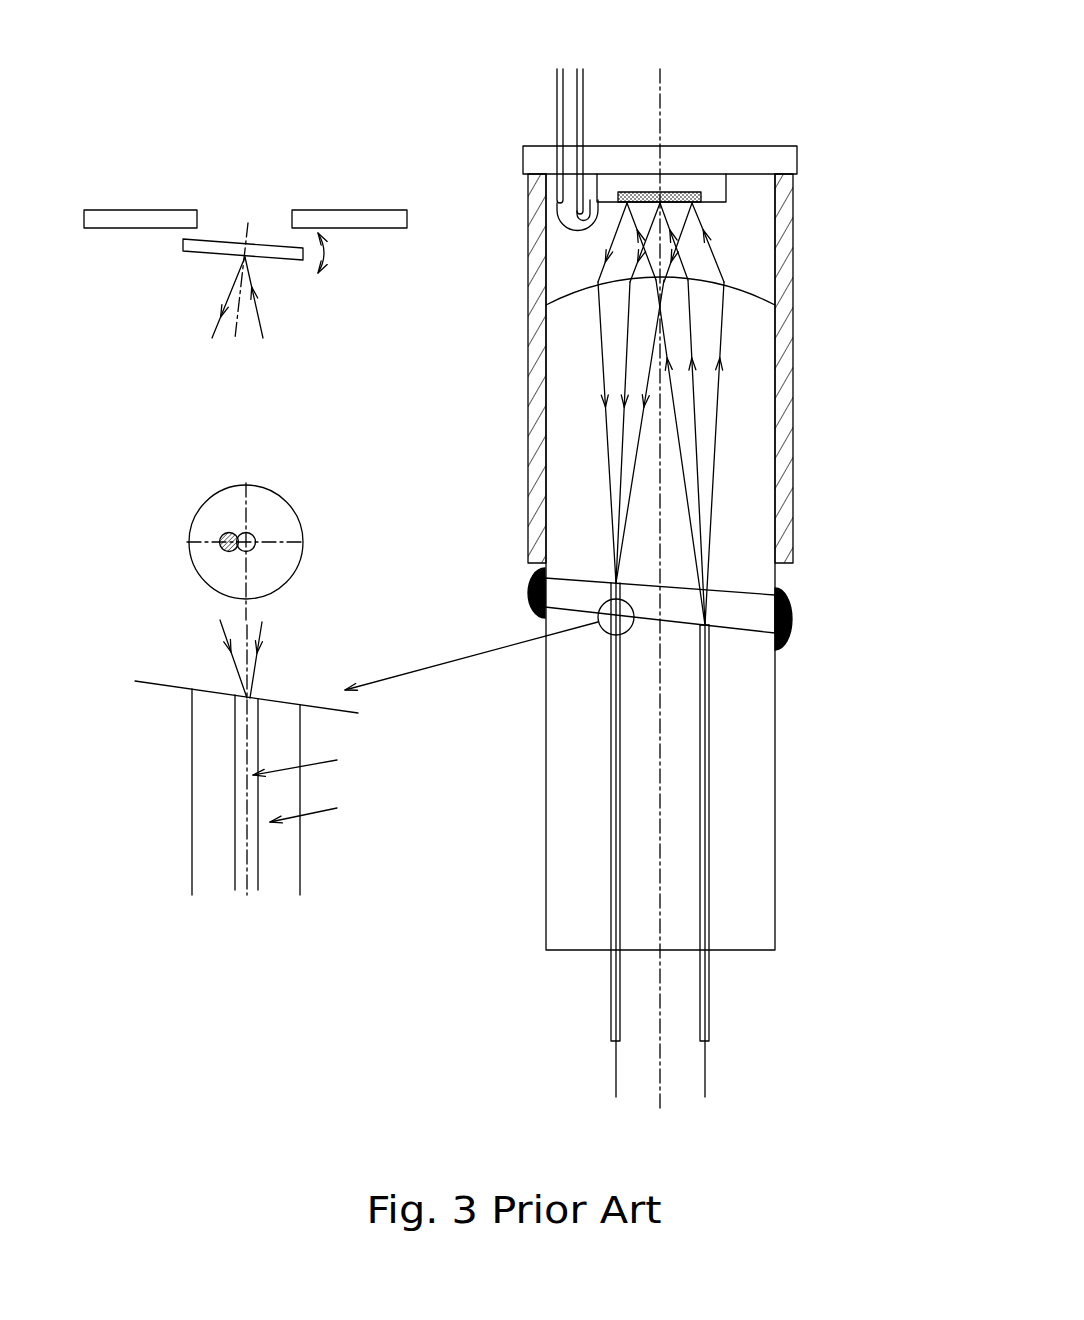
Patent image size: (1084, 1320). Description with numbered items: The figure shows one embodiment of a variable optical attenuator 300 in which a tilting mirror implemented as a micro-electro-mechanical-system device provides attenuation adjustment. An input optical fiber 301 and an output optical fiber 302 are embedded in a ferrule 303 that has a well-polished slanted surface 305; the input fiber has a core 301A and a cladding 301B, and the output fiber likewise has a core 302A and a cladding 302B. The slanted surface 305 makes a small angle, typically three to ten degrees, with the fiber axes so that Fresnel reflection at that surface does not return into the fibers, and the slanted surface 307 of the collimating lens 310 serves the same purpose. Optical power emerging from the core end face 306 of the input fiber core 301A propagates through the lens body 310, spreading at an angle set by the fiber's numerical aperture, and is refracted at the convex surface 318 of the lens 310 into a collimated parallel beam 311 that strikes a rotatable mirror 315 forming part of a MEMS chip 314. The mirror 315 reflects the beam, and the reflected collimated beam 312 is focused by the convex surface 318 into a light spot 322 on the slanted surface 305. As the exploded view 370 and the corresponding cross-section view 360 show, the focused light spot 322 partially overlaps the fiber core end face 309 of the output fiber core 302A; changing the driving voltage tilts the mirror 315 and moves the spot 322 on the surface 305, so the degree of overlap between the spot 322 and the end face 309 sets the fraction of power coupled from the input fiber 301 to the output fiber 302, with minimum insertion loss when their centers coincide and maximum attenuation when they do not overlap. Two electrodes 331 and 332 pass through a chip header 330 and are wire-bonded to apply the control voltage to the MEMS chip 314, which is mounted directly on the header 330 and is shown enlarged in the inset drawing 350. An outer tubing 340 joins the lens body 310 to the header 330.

The variable optical attenuator 300 is at (827, 62).
The input optical fiber 301 is at (787, 861).
The core of the input fiber 301A is at (707, 791).
The cladding of the input fiber 301B is at (710, 838).
The output optical fiber 302 is at (534, 840).
The core of the output fiber 302A is at (615, 812).
The cladding of the output fiber 302B is at (612, 873).
The ferrule 303 is at (541, 774).
The slanted surface 305 is at (753, 633).
The core end face 306 is at (710, 623).
The slanted surface of the collimating lens 307 is at (567, 585).
The fiber core end face 309 is at (257, 693).
The collimating lens 310 is at (752, 442).
The collimated parallel beam 311 is at (647, 252).
The reflected collimated beam 312 is at (605, 252).
The MEMS chip 314 is at (612, 187).
The rotatable mirror 315 is at (685, 190).
The convex surface of the lens 318 is at (752, 292).
The light spot 322 is at (228, 528).
The chip header 330 is at (770, 158).
The electrode 331 is at (555, 102).
The electrode 332 is at (583, 102).
The outer tubing 340 is at (795, 365).
The inset drawing 350 is at (265, 155).
The cross-section view 360 is at (255, 463).
The exploded view 370 is at (148, 643).